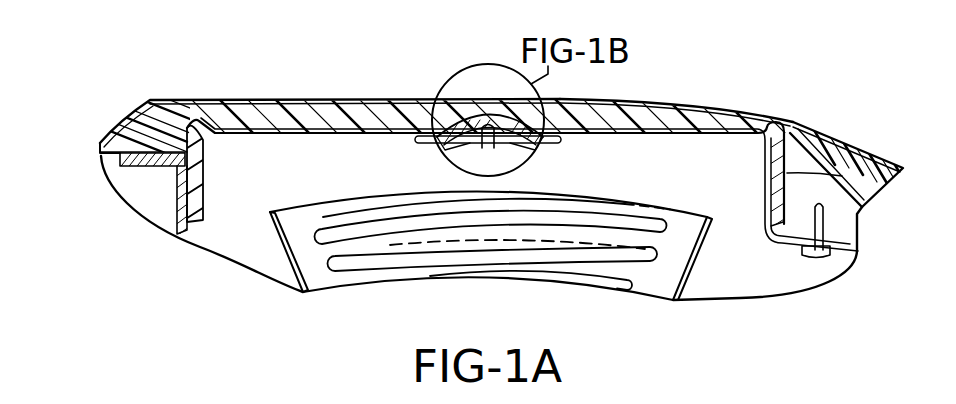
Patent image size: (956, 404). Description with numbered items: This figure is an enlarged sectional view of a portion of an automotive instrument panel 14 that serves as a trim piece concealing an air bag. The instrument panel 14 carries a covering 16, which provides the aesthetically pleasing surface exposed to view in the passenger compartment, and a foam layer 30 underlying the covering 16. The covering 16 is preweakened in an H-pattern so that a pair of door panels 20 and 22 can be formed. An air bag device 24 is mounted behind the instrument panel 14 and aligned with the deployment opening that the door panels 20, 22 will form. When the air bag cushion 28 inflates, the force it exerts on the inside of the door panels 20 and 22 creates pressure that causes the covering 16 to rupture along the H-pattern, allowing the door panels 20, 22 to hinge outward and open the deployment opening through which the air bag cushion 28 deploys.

The instrument panel 14 is at (231, 102).
The covering 16 is at (761, 111).
The door panel 20 is at (278, 141).
The door panel 22 is at (739, 140).
The air bag device 24 is at (290, 266).
The air bag cushion 28 is at (648, 258).
The foam layer 30 is at (710, 110).